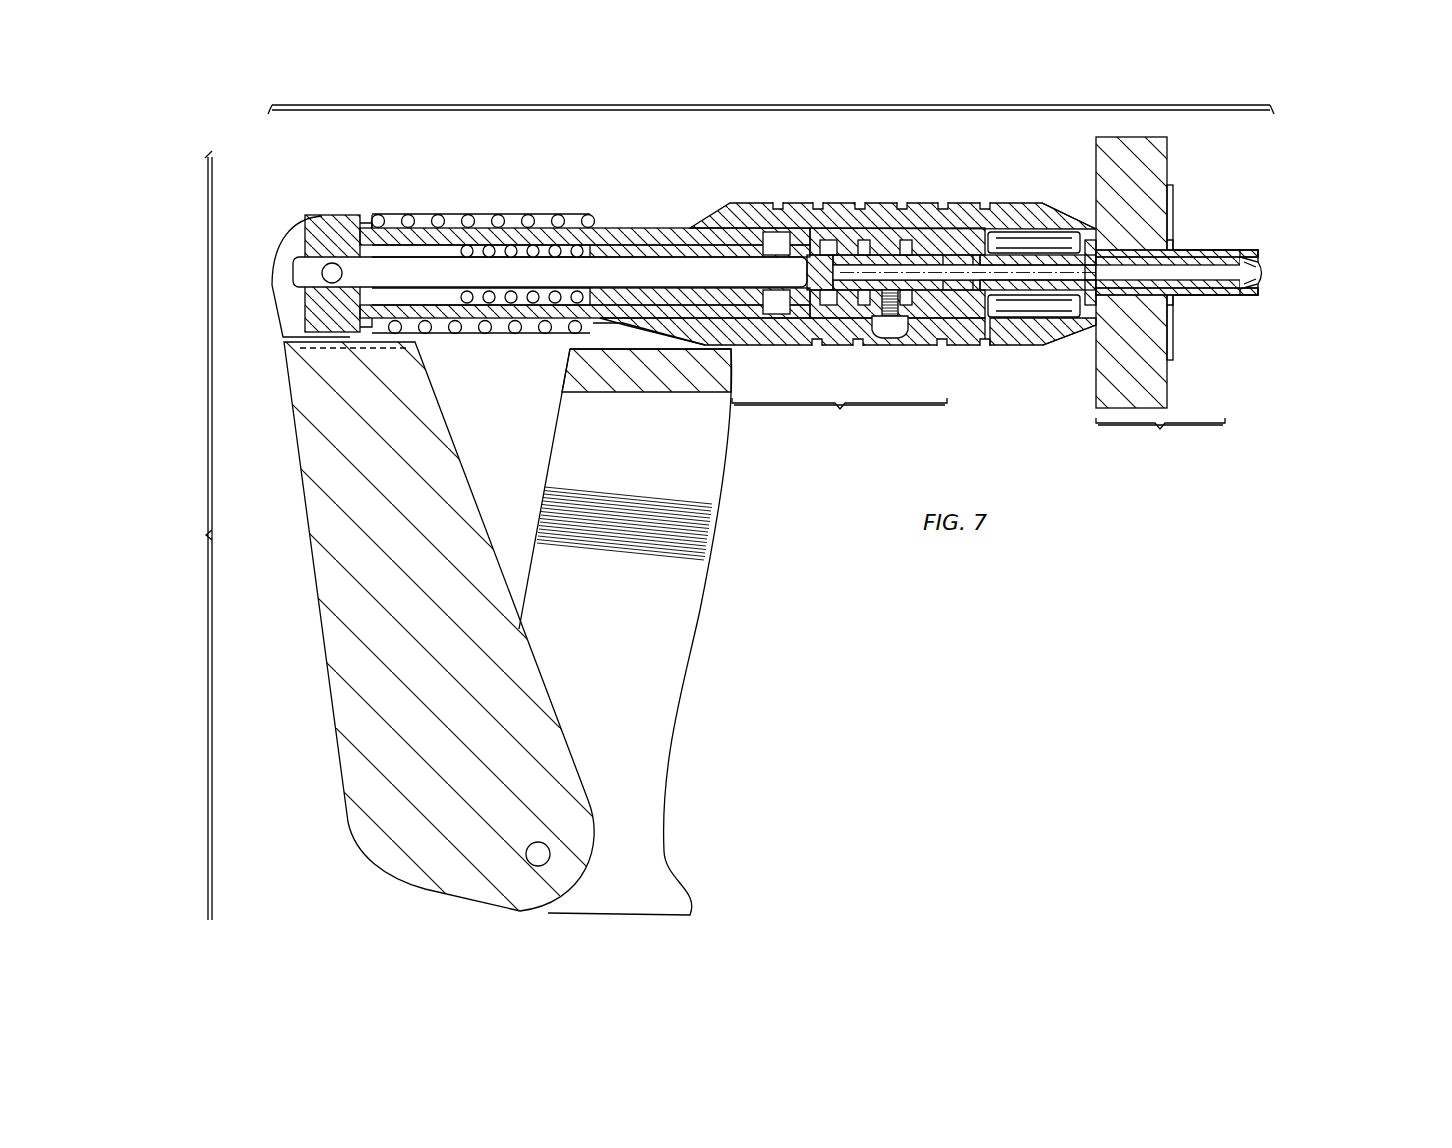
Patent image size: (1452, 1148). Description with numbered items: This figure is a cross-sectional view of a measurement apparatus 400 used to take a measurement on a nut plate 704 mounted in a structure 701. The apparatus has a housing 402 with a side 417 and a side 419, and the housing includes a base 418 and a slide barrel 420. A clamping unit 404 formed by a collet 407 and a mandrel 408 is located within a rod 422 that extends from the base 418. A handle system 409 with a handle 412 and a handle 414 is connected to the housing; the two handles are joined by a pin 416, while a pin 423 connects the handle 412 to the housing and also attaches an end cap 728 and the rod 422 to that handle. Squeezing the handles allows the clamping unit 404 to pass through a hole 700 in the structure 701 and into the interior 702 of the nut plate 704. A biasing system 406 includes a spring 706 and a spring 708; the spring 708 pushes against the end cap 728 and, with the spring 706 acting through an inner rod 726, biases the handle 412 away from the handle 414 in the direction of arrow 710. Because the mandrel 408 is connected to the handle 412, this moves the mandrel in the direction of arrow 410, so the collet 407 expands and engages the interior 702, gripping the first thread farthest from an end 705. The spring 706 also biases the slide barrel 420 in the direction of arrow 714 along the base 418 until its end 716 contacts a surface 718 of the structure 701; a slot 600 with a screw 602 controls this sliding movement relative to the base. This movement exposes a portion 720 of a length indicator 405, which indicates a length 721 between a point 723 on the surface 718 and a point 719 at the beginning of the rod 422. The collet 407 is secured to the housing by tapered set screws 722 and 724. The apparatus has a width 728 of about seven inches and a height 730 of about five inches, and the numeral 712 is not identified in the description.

The measurement apparatus 400 is at (212, 120).
The housing 402 is at (793, 440).
The clamping unit 404 is at (1290, 213).
The length indicator 405 is at (672, 218).
The biasing system 406 is at (455, 182).
The collet 407 is at (1240, 299).
The mandrel 408 is at (1264, 274).
The handle system 409 is at (298, 612).
The arrow 410 is at (1355, 270).
The handle 412 is at (327, 741).
The handle 414 is at (690, 697).
The pin 416 is at (526, 856).
The side 417 is at (1010, 203).
The base 418 is at (756, 347).
The side 419 is at (1008, 347).
The slide barrel 420 is at (858, 227).
The rod 422 is at (1200, 296).
The pin 423 is at (322, 273).
The slot 600 is at (839, 419).
The screw 602 is at (905, 346).
The hole 700 is at (1168, 320).
The structure 701 is at (1168, 147).
The interior 702 is at (1240, 256).
The nut plate 704 is at (1194, 249).
The end 705 is at (1266, 263).
The spring 706 is at (530, 214).
The spring 708 is at (482, 318).
The arrow 710 is at (290, 432).
The housing notches 712 is at (912, 201).
The arrow 714 is at (812, 166).
The end 716 is at (1090, 212).
The surface 718 is at (1095, 150).
The point 719 is at (1256, 298).
The portion 720 is at (640, 225).
The length 721 is at (1160, 437).
The tapered set screw 722 is at (966, 346).
The point 723 is at (1090, 336).
The tapered set screw 724 is at (976, 232).
The rod 726 is at (626, 240).
The end cap 728 is at (335, 195).
The height 730 is at (184, 535).